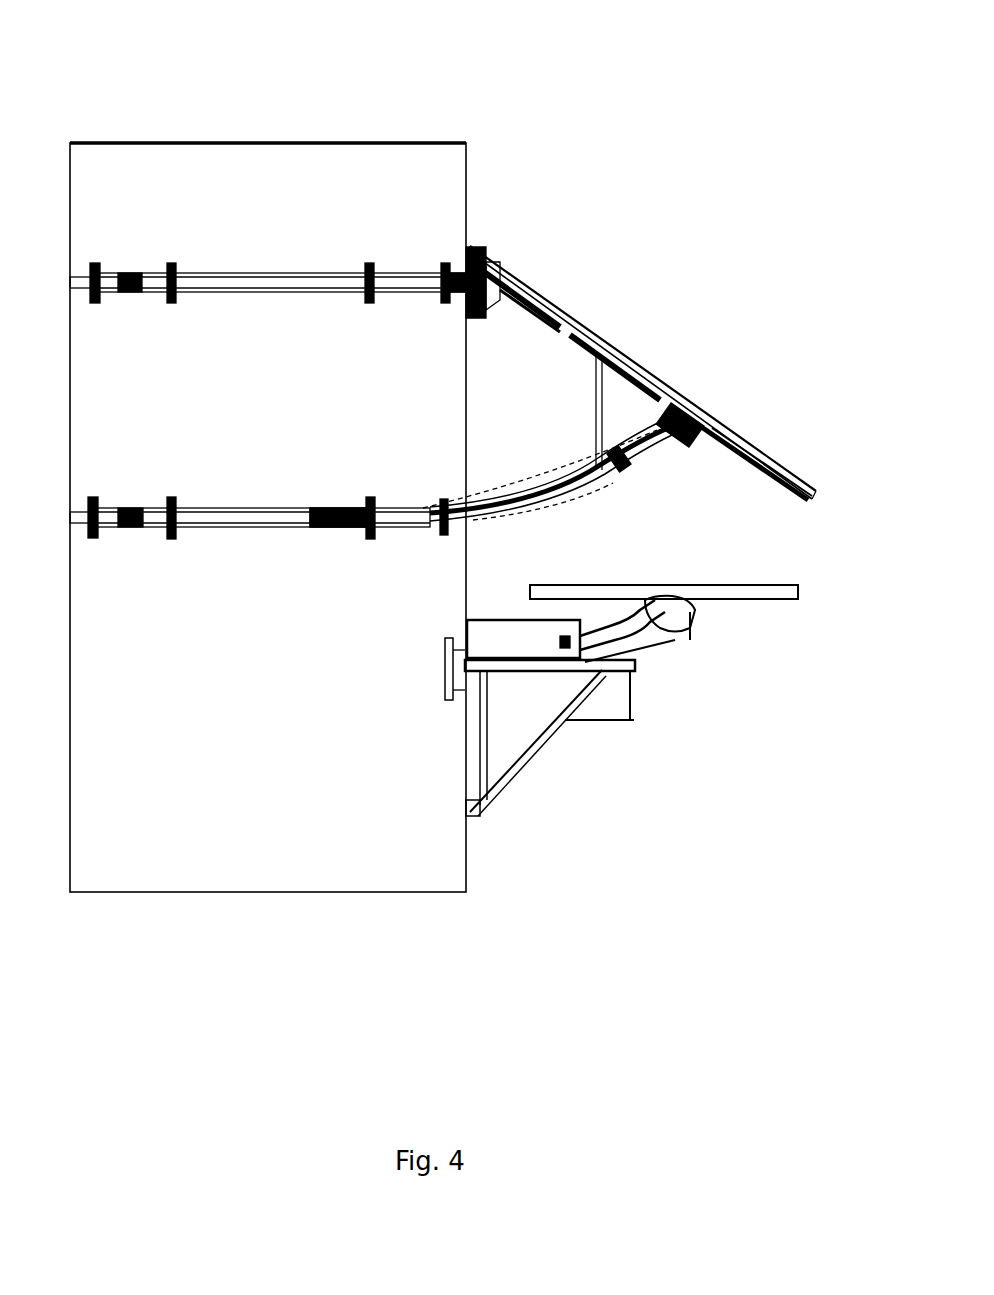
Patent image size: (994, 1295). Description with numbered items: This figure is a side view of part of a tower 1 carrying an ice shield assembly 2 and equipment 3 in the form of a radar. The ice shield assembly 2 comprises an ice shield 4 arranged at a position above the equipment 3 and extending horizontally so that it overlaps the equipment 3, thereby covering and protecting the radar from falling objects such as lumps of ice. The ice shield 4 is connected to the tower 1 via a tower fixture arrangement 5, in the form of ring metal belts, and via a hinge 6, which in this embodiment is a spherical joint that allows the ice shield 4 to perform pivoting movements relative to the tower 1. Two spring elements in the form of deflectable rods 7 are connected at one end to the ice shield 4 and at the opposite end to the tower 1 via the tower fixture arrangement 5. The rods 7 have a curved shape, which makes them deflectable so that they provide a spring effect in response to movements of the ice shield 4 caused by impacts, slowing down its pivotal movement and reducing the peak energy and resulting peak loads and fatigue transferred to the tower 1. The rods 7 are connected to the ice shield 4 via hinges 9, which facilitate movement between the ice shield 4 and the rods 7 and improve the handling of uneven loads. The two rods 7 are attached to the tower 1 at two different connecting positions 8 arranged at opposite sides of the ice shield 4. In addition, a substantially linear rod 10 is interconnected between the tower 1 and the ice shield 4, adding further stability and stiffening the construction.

The tower 1 is at (325, 178).
The ice shield assembly 2 is at (643, 497).
The equipment 3 is at (668, 648).
The ice shield 4 is at (644, 367).
The tower fixture arrangement 5 is at (254, 505).
The hinge 6 is at (477, 305).
The deflectable rods 7 is at (532, 507).
The connecting positions 8 is at (325, 528).
The hinges 9 is at (700, 428).
The rod 10 is at (573, 465).